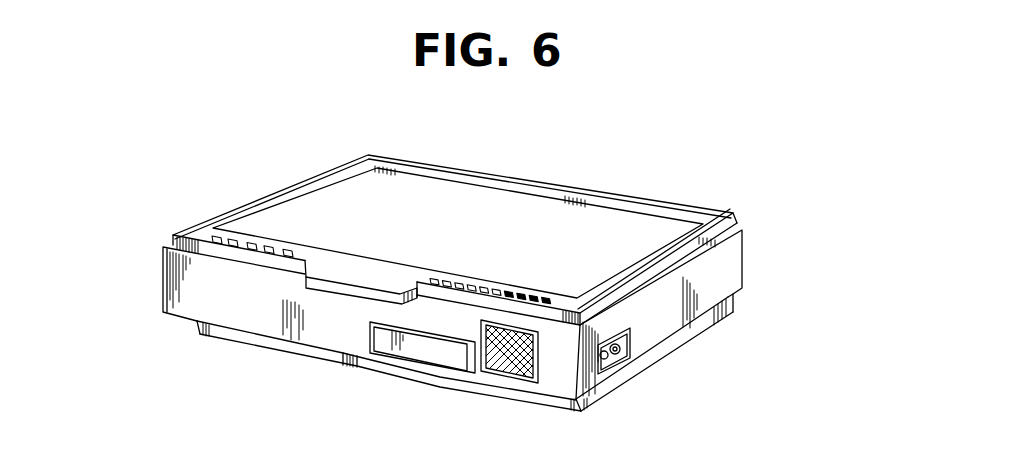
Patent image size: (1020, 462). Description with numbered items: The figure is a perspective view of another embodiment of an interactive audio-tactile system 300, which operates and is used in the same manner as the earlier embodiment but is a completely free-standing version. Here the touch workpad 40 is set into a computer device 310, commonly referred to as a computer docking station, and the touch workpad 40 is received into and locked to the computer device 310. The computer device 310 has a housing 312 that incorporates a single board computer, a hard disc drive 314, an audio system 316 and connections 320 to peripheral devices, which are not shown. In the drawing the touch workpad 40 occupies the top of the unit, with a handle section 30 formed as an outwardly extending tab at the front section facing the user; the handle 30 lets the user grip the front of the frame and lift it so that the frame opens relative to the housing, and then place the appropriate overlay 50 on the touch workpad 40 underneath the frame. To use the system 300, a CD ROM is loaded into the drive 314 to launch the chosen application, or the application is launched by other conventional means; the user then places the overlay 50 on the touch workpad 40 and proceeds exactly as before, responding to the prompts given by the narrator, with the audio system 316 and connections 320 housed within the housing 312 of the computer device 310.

The interactive audio-tactile system 300 is at (515, 163).
The overlay 50 is at (630, 229).
The handle section 30 is at (357, 287).
The touch workpad 40 is at (533, 300).
The computer device 310 is at (327, 337).
The housing 312 is at (192, 298).
The hard disc drive 314 is at (417, 352).
The audio system 316 is at (523, 372).
The connections 320 is at (623, 355).